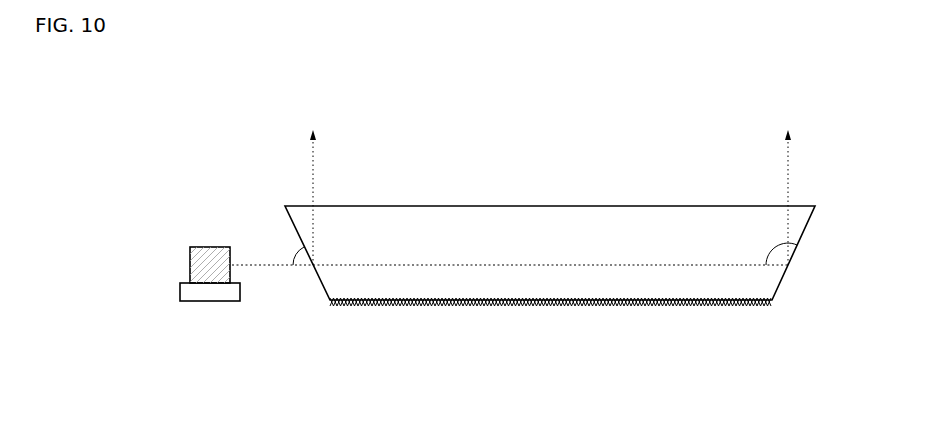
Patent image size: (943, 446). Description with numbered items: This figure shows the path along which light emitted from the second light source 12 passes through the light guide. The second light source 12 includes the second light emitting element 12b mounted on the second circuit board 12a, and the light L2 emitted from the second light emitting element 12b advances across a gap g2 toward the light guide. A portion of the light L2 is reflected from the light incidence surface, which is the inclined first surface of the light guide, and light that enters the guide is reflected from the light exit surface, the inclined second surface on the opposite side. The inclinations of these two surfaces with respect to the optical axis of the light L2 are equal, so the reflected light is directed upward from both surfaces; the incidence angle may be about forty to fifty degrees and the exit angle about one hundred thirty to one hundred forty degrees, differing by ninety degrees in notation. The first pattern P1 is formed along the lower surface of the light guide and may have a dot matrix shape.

The second light source 12 is at (176, 311).
The second circuit board 12a is at (180, 292).
The second light emitting element 12b is at (190, 263).
The gap between light source and plate g2 is at (270, 281).
The first pattern P1 is at (558, 319).
The light L2 is at (551, 248).